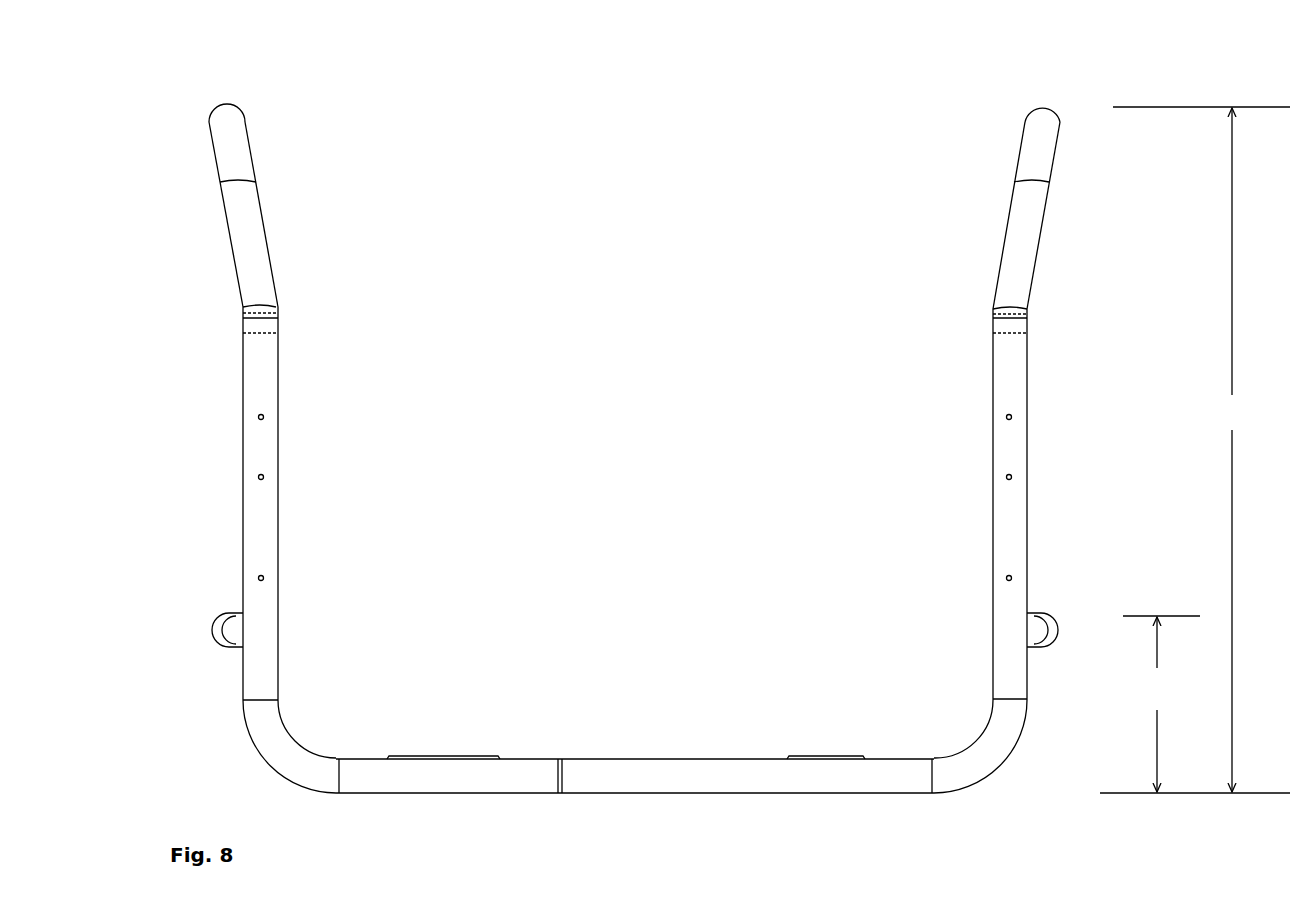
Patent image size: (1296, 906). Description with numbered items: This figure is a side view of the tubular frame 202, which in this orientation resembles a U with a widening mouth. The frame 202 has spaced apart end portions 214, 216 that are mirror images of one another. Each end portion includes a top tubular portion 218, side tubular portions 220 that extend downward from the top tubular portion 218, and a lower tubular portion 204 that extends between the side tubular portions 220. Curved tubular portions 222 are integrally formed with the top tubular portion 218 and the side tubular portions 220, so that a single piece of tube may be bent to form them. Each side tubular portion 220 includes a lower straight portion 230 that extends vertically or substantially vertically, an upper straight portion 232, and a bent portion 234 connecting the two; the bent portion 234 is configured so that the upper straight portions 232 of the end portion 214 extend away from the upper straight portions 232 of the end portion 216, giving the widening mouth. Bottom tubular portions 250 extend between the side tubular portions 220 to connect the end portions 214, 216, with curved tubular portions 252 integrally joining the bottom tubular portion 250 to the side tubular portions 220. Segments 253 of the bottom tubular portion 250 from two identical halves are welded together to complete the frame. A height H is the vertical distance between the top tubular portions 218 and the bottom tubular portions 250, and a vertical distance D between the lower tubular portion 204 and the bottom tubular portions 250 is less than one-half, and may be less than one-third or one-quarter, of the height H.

The frame 202 is at (712, 62).
The end portion 214 is at (281, 183).
The end portion 216 is at (1041, 189).
The top tubular portion 218 is at (225, 100).
The side tubular portion 220 is at (254, 509).
The curved tubular portion 222 is at (235, 153).
The lower straight portion 230 is at (260, 512).
The upper straight portion 232 is at (258, 258).
The bent portion 234 is at (272, 313).
The lower tubular portion 204 is at (211, 623).
The bottom tubular portion 250 is at (635, 772).
The curved tubular portion 252 is at (285, 746).
The segment 253 is at (427, 783).
The height H is at (1201, 449).
The vertical distance D is at (1195, 704).